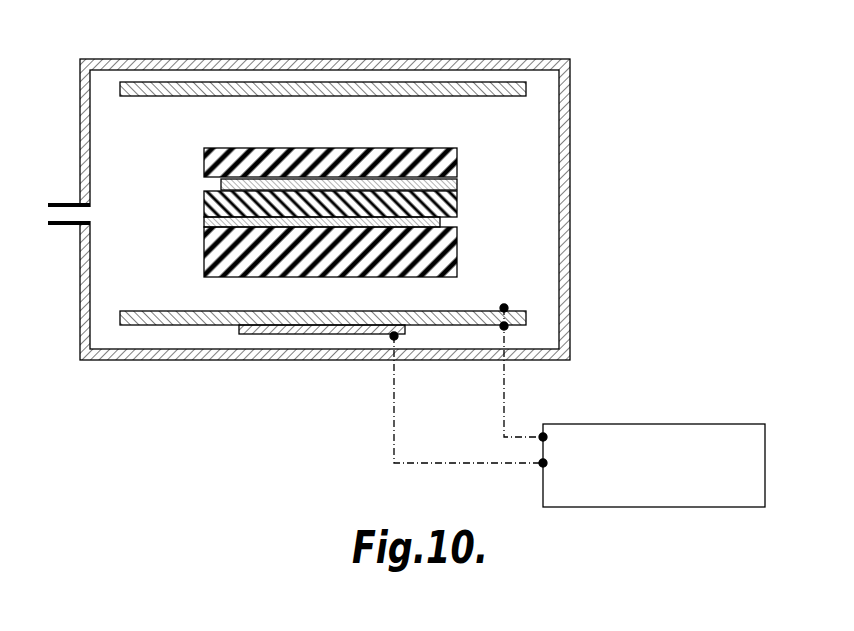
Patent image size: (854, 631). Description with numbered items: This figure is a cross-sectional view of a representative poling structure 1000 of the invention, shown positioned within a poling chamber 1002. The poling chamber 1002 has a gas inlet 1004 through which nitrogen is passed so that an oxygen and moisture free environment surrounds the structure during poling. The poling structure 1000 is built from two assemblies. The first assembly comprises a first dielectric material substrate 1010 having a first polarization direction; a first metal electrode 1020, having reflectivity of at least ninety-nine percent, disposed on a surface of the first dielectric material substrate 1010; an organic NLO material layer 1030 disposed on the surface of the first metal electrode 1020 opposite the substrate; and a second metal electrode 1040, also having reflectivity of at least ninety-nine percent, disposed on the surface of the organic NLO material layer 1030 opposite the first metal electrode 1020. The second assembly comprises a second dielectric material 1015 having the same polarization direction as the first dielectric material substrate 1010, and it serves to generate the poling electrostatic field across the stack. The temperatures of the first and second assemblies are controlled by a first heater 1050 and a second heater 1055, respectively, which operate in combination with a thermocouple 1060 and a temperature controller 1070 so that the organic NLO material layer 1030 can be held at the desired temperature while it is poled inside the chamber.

The poling structure 1000 is at (526, 72).
The poling chamber 1002 is at (298, 360).
The gas inlet 1004 is at (58, 212).
The first dielectric material substrate 1010 is at (204, 254).
The second dielectric material 1015 is at (204, 151).
The first metal electrode 1020 is at (204, 222).
The organic NLO material layer 1030 is at (204, 200).
The second metal electrode 1040 is at (221, 185).
The first heater 1050 is at (182, 311).
The second heater 1055 is at (198, 82).
The thermocouple 1060 is at (258, 334).
The temperature controller 1070 is at (803, 456).